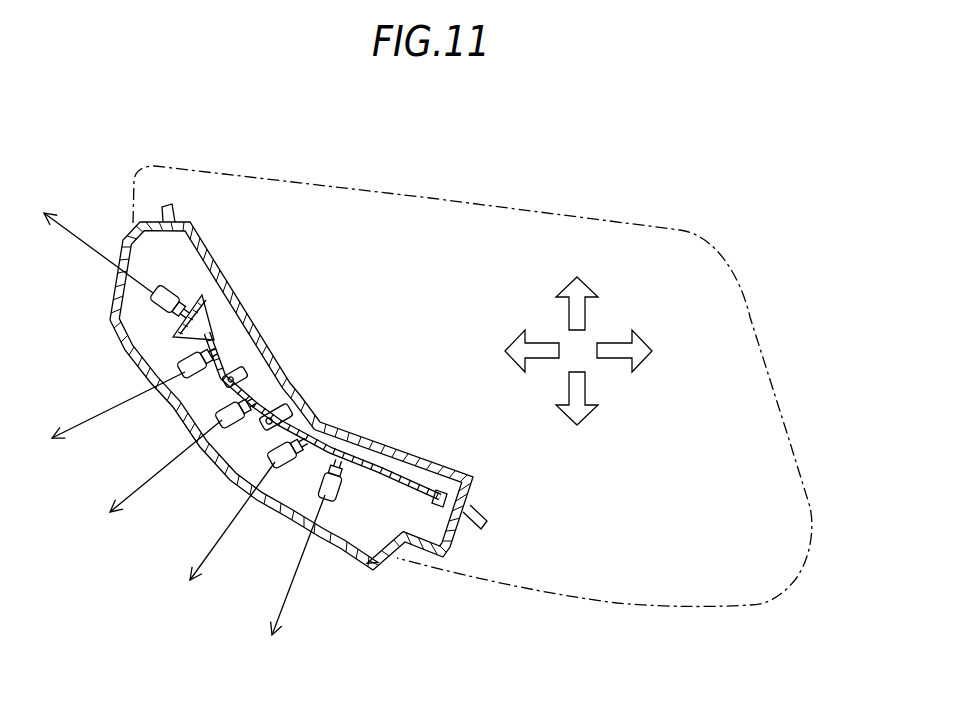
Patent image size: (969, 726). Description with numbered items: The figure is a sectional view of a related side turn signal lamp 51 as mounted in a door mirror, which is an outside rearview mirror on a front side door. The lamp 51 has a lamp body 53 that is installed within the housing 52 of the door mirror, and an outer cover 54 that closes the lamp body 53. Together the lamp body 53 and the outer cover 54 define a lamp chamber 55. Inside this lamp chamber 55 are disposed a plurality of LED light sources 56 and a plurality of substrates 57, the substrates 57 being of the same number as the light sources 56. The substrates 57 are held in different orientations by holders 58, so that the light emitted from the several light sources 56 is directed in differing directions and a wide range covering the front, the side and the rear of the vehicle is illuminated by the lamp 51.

The side turn signal lamp 51 is at (348, 325).
The housing 52 is at (485, 205).
The lamp body 53 is at (212, 252).
The outer cover 54 is at (165, 407).
The lamp chamber 55 is at (237, 447).
The LED light sources 56 is at (152, 312).
The substrates 57 is at (218, 346).
The holders 58 is at (280, 408).